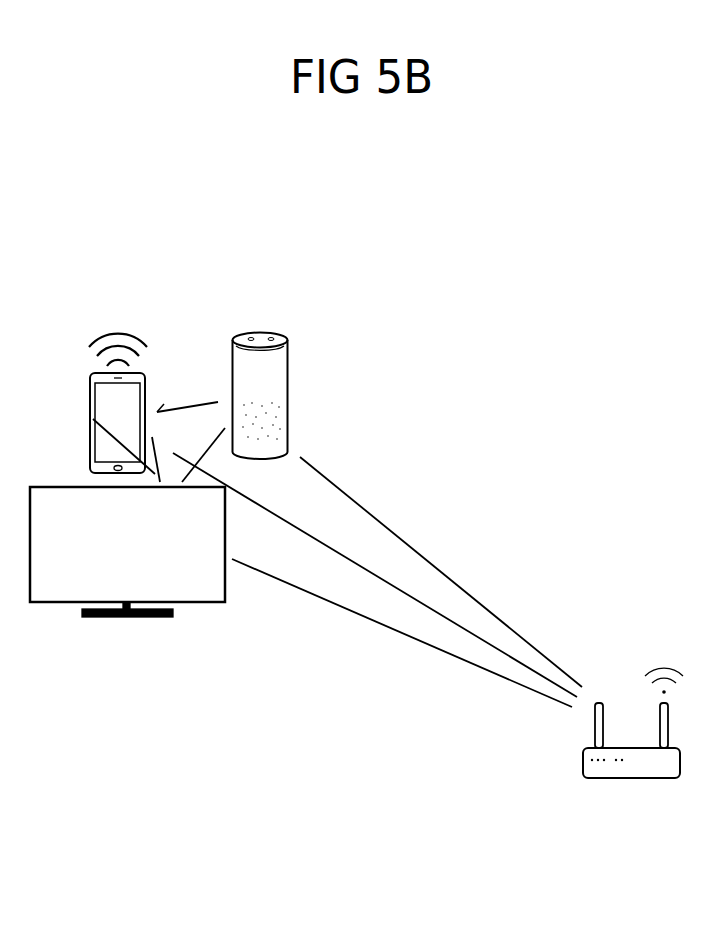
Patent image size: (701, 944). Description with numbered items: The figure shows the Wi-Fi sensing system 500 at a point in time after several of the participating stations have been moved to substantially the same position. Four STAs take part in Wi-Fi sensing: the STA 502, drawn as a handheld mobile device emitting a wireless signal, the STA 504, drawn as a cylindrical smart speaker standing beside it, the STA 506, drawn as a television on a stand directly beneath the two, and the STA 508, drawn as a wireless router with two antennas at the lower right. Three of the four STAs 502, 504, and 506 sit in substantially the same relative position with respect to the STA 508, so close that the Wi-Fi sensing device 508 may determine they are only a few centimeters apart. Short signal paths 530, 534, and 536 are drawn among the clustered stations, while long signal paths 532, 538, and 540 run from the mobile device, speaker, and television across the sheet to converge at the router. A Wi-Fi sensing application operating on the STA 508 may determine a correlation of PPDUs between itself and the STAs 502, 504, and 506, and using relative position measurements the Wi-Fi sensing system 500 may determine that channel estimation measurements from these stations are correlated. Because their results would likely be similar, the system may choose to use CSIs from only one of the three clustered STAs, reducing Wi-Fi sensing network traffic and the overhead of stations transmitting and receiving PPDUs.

The Wi-Fi sensing system 500 is at (295, 215).
The STA 502 is at (113, 337).
The STA 504 is at (260, 332).
The STA 506 is at (92, 618).
The STA 508 is at (632, 779).
The signal from speaker to mobile device 530 is at (162, 408).
The signal between speaker and router 532 is at (390, 588).
The signal between speaker and television 534 is at (207, 450).
The signal between mobile device and television 536 is at (93, 419).
The signal between speaker and router 538 is at (546, 653).
The signal between television and router 540 is at (457, 658).